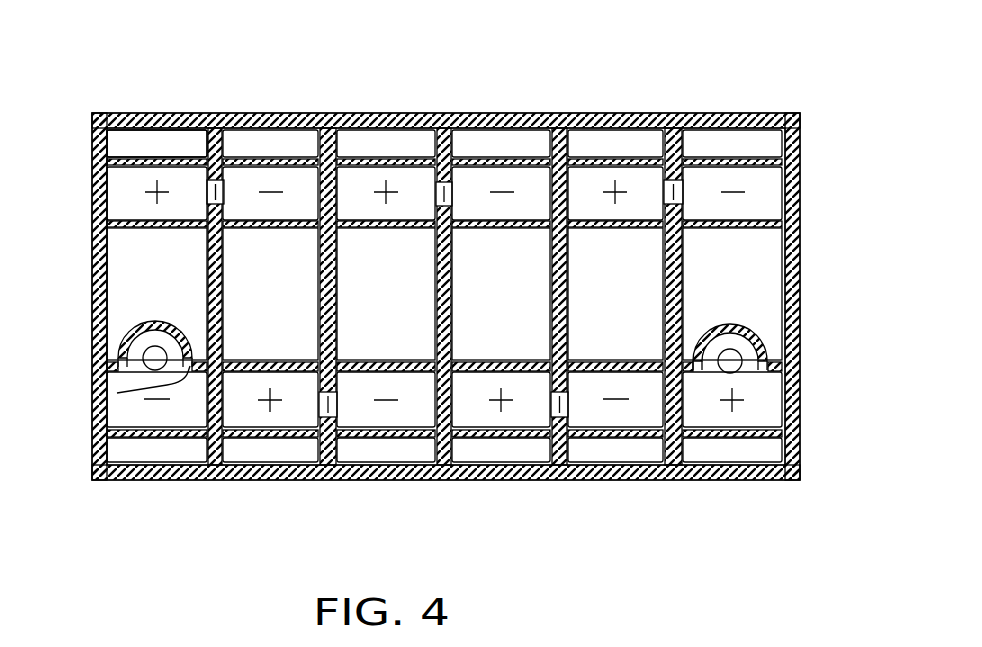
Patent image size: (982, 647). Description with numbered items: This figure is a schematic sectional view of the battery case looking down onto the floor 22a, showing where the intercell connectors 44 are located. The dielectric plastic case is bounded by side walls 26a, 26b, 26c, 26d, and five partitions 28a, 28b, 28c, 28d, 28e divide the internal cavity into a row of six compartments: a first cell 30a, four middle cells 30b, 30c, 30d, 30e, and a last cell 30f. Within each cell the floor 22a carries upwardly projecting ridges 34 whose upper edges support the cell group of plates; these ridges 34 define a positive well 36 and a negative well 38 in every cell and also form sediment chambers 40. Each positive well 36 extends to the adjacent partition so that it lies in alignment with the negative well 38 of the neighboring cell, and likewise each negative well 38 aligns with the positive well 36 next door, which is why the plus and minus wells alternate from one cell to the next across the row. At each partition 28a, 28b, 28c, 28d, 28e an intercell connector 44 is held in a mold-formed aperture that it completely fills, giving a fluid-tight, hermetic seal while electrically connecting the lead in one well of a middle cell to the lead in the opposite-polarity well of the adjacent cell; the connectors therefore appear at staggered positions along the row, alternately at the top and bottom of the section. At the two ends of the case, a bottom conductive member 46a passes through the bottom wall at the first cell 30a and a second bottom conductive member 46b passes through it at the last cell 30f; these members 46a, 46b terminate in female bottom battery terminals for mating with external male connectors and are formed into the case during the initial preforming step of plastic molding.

The floor 22a is at (768, 265).
The side wall 26a is at (635, 482).
The side wall 26b is at (606, 116).
The side wall 26c is at (93, 284).
The side wall 26d is at (805, 300).
The partition 28a is at (220, 302).
The partition 28b is at (338, 302).
The partition 28c is at (453, 302).
The partition 28d is at (570, 302).
The partition 28e is at (683, 302).
The first cell 30a is at (157, 294).
The middle cell 30b is at (270, 294).
The middle cell 30c is at (386, 294).
The middle cell 30d is at (501, 294).
The middle cell 30e is at (615, 294).
The last cell 30f is at (732, 294).
The ridge 34 is at (163, 153).
The positive well 36 is at (634, 178).
The negative well 38 is at (156, 415).
The sediment chamber 40 is at (538, 220).
The intercell connector 44 is at (226, 170).
The bottom conductive member 46a is at (145, 355).
The bottom conductive member 46b is at (733, 362).